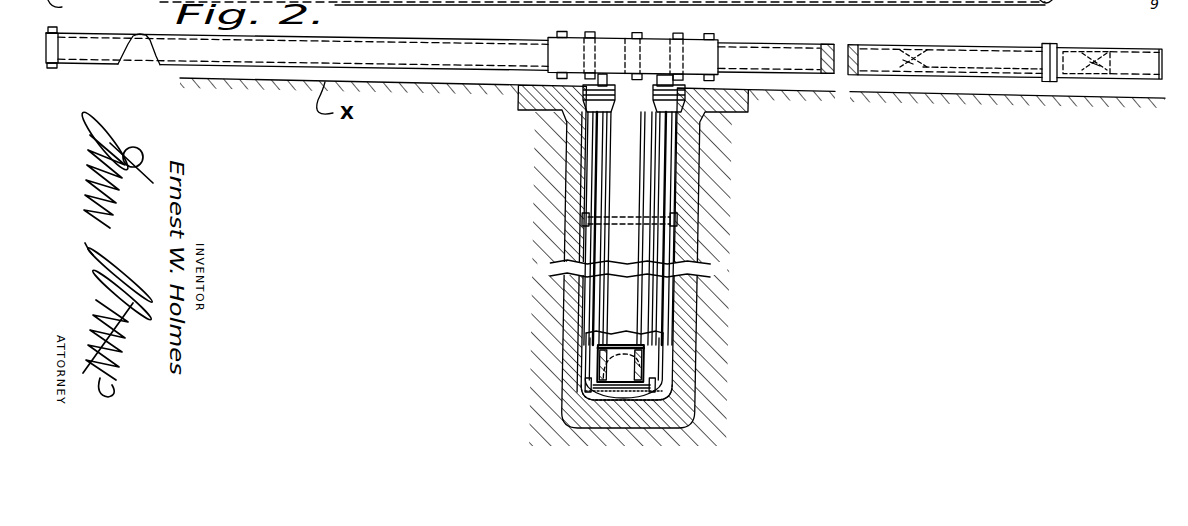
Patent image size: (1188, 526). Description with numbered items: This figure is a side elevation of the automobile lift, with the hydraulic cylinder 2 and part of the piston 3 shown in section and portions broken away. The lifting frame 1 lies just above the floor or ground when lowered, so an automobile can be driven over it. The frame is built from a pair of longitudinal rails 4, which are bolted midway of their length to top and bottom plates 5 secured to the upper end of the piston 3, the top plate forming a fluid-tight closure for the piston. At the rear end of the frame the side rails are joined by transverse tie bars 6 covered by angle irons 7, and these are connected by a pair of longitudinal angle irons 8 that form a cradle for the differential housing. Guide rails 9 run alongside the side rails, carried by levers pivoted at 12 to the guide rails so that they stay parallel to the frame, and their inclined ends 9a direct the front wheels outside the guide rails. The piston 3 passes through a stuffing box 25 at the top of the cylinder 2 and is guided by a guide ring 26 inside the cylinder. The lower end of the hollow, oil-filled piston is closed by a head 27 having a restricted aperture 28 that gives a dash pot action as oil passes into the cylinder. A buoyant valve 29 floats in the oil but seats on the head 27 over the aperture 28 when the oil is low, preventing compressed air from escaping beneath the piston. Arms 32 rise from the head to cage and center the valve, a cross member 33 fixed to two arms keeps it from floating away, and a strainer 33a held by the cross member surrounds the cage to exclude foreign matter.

The lifting frame 1 is at (380, 40).
The hydraulic cylinder 2 is at (677, 230).
The piston 3 is at (612, 166).
The longitudinal rails 4 is at (855, 47).
The top and bottom plates 5 is at (714, 72).
The transverse tie bars 6 is at (907, 63).
The angle irons 7 is at (928, 56).
The longitudinal angle irons 8 is at (982, 67).
The guide rails 9 is at (800, 62).
The inclined ends of the guide rails 9a is at (1140, 72).
The pivot 12 is at (1048, 0).
The stuffing box 25 is at (614, 104).
The guide ring 26 is at (590, 220).
The head 27 is at (663, 400).
The aperture 28 is at (590, 390).
The valve 29 is at (605, 370).
The arms 32 is at (652, 340).
The cross member 33 is at (619, 347).
The strainer 33a is at (600, 348).